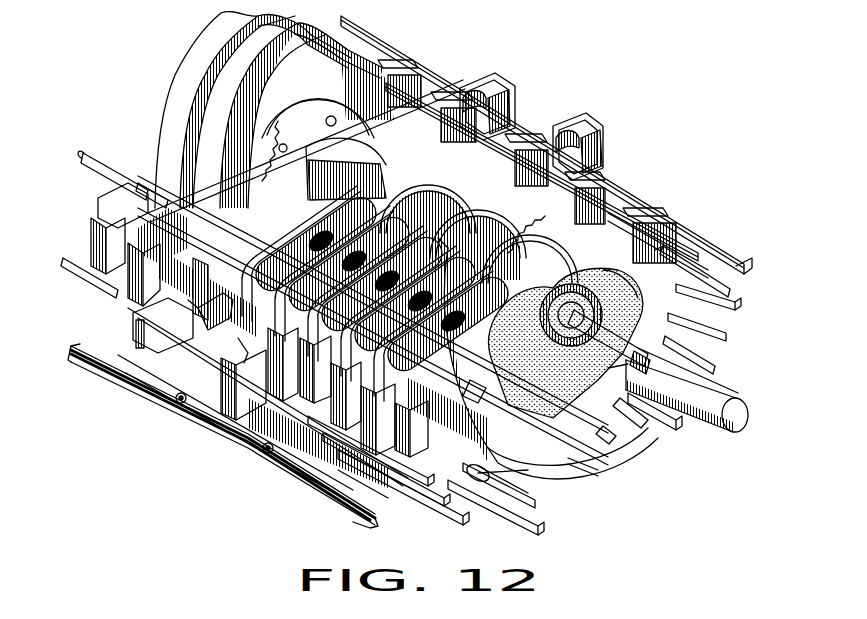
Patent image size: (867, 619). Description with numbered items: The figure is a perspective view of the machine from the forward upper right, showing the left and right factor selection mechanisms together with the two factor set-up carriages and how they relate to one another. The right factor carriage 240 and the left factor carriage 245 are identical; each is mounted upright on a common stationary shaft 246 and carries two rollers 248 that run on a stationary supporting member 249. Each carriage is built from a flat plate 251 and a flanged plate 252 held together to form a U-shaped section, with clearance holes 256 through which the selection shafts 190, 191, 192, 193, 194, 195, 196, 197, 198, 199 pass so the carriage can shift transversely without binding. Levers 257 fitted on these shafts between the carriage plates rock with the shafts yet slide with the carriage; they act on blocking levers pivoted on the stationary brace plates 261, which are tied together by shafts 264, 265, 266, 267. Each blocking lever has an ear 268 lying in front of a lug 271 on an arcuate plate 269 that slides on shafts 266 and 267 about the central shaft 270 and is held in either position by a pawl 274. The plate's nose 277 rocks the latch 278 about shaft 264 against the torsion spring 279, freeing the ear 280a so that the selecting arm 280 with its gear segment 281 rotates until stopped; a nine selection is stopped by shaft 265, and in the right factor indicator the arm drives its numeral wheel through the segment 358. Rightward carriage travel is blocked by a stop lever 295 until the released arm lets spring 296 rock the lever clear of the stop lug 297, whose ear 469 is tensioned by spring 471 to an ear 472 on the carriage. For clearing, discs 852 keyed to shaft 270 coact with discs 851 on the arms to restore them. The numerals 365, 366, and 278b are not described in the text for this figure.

The disc 851 is at (195, 33).
The disc 852 is at (178, 103).
The gear segment 281 is at (266, 117).
The selecting arm 280 is at (240, 187).
The ear 280a is at (445, 384).
The nose 277 is at (217, 237).
The selection shaft 198 is at (738, 262).
The right factor carriage 240 is at (645, 183).
The left factor carriage 245 is at (556, 106).
The flat plate 251 is at (458, 85).
The lever 257 is at (487, 75).
The flanged plate 252 is at (504, 94).
The brace plate 261 is at (650, 225).
The segment 358 is at (505, 254).
The latch 278 is at (480, 414).
The hub 365 is at (522, 336).
The housing boss 366 is at (622, 282).
The central shaft 270 is at (645, 342).
The stationary shaft 246 is at (740, 402).
The shaft 266 is at (675, 402).
The shaft 265 is at (735, 284).
The selection shaft 197 is at (739, 299).
The selection shaft 196 is at (722, 328).
The selection shaft 195 is at (710, 356).
The ear 268 is at (620, 418).
The lug 271 is at (600, 440).
The selection shaft 194 is at (668, 424).
The selection shaft 193 is at (619, 473).
The selection shaft 190 is at (400, 478).
The selection shaft 191 is at (420, 497).
The selection shaft 199 is at (450, 515).
The selection shaft 192 is at (525, 524).
The shaft 267 is at (532, 500).
The arcuate plate 269 is at (545, 482).
The pawl 274 is at (548, 470).
The stationary supporting member 249 is at (293, 493).
The ear 469 is at (102, 365).
The roller 248 is at (170, 403).
The stationary shaft 264 is at (100, 155).
The torsion spring 279 is at (138, 173).
The bracket 278b is at (105, 198).
The spring 296 is at (85, 228).
The stop lever 295 is at (95, 288).
The ear 472 is at (127, 315).
The spring 471 is at (130, 331).
The stop lug 297 is at (195, 292).
The clearance hole 256 is at (197, 312).